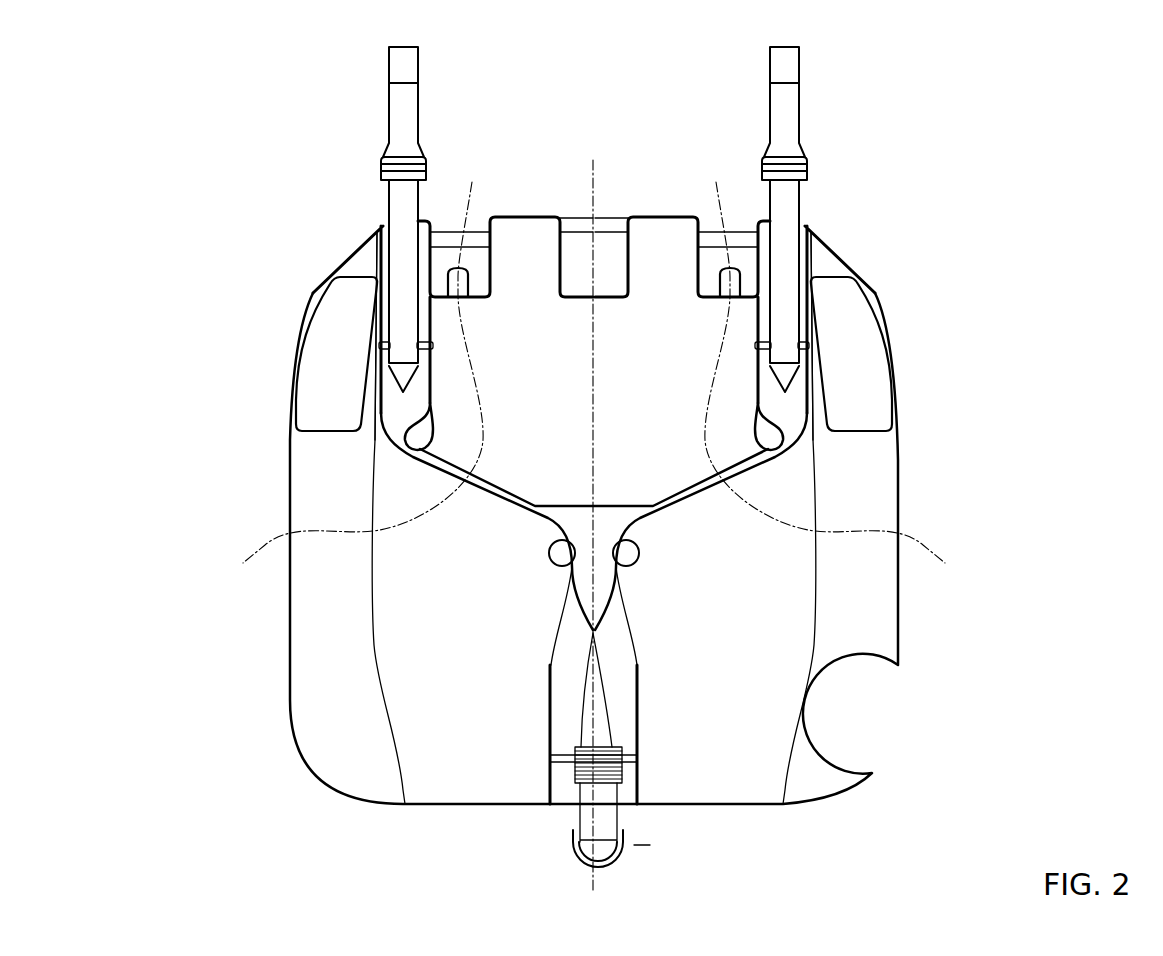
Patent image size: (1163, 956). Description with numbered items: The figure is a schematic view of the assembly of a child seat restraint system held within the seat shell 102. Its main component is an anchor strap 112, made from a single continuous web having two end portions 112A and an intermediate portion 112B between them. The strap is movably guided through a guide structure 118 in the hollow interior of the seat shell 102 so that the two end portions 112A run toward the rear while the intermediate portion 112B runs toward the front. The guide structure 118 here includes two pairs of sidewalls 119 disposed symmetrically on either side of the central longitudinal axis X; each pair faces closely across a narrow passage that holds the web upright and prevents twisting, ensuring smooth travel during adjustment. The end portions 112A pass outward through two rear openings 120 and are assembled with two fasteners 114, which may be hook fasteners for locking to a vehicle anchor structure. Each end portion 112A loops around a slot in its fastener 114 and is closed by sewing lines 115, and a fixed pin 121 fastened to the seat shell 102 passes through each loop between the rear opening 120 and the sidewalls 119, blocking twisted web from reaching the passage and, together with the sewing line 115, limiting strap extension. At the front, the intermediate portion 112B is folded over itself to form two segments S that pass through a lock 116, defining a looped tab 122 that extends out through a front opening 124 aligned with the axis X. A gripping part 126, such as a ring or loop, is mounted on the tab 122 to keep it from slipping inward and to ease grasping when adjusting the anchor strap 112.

The seat shell 102 is at (900, 513).
The anchor strap 112 is at (603, 622).
The end portions 112A is at (789, 318).
The intermediate portion 112B is at (604, 722).
The fasteners 114 is at (783, 98).
The sewing lines 115 is at (820, 392).
The lock 116 is at (552, 770).
The guide structure 118 is at (661, 521).
The sidewalls 119 is at (595, 371).
The rear openings 120 is at (808, 224).
The fixed pin 121 is at (798, 354).
The tab 122 is at (632, 845).
The front opening 124 is at (562, 812).
The gripping part 126 is at (598, 866).
The segments S is at (607, 821).
The central longitudinal axis X is at (597, 183).